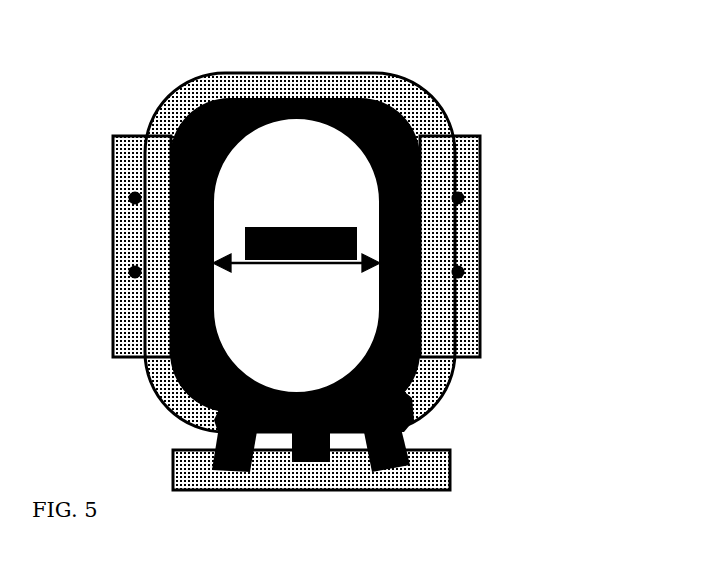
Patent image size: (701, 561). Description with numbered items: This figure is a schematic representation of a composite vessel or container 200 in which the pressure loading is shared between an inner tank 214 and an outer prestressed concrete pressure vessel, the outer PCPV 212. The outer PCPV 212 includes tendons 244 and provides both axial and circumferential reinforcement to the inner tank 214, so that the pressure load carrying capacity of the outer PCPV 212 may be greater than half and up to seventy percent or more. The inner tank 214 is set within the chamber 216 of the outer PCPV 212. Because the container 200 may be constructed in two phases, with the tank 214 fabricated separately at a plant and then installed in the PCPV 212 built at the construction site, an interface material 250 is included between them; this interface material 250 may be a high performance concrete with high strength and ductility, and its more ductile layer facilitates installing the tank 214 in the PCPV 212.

The container 200 is at (354, 259).
The outer PCPV 212 is at (246, 246).
The inner tank 214 is at (279, 100).
The chamber 216 is at (400, 130).
The tendons 244 is at (451, 180).
The interface material 250 is at (427, 308).